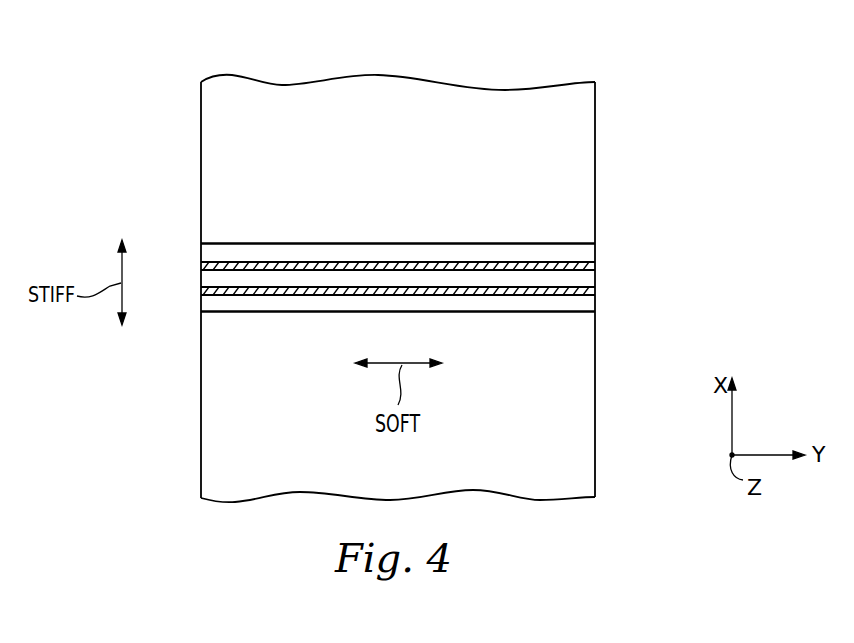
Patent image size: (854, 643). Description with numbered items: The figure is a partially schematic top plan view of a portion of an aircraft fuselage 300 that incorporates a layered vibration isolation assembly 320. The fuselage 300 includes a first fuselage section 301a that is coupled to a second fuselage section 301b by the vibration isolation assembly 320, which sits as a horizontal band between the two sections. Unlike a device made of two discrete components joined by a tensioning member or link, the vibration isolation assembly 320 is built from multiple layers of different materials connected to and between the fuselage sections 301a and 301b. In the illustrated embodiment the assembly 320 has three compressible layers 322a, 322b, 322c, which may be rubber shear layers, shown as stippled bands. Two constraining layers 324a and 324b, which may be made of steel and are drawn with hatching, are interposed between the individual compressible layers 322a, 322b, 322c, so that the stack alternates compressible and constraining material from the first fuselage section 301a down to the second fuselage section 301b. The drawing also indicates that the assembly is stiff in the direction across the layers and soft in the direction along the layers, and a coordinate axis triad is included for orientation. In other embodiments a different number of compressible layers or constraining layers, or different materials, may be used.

The aircraft fuselage 300 is at (667, 80).
The first fuselage section 301a is at (589, 169).
The second fuselage section 301b is at (589, 408).
The vibration isolation assembly 320 is at (613, 243).
The compressible layer 322a is at (201, 252).
The compressible layer 322b is at (200, 277).
The compressible layer 322c is at (200, 302).
The constraining layer 324a is at (438, 266).
The constraining layer 324b is at (510, 290).